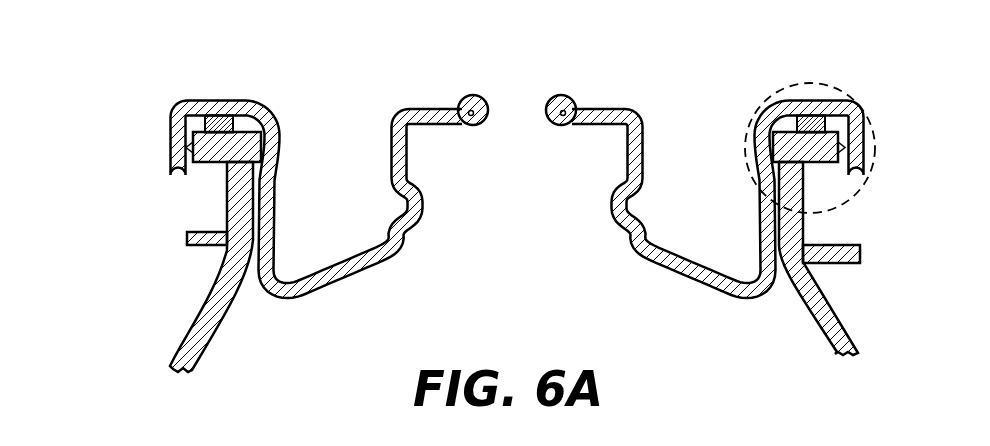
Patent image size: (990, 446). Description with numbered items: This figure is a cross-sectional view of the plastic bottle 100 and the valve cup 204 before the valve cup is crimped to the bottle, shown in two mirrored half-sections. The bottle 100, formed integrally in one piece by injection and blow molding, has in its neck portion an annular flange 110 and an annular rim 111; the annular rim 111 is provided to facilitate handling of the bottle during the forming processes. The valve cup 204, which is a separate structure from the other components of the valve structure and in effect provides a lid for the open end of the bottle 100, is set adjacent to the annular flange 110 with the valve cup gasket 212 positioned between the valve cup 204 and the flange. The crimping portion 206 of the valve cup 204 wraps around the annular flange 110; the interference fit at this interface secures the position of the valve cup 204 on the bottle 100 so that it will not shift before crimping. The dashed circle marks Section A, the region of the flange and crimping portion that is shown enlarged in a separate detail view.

The plastic bottle 100 is at (150, 310).
The annular flange 110 is at (220, 153).
The annular rim 111 is at (832, 258).
The valve cup 204 is at (420, 110).
The crimping portion 206 is at (177, 140).
The valve cup gasket 212 is at (212, 117).
The Section A is at (853, 102).